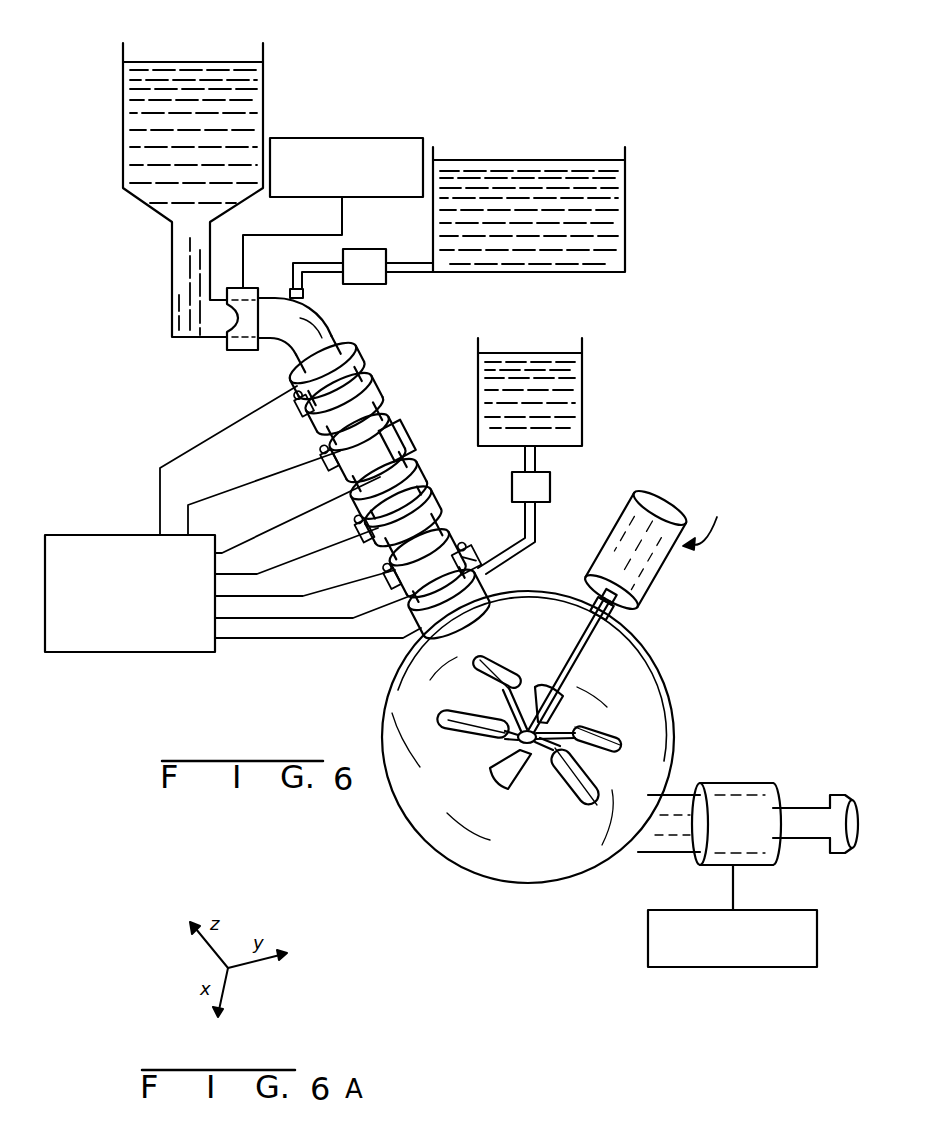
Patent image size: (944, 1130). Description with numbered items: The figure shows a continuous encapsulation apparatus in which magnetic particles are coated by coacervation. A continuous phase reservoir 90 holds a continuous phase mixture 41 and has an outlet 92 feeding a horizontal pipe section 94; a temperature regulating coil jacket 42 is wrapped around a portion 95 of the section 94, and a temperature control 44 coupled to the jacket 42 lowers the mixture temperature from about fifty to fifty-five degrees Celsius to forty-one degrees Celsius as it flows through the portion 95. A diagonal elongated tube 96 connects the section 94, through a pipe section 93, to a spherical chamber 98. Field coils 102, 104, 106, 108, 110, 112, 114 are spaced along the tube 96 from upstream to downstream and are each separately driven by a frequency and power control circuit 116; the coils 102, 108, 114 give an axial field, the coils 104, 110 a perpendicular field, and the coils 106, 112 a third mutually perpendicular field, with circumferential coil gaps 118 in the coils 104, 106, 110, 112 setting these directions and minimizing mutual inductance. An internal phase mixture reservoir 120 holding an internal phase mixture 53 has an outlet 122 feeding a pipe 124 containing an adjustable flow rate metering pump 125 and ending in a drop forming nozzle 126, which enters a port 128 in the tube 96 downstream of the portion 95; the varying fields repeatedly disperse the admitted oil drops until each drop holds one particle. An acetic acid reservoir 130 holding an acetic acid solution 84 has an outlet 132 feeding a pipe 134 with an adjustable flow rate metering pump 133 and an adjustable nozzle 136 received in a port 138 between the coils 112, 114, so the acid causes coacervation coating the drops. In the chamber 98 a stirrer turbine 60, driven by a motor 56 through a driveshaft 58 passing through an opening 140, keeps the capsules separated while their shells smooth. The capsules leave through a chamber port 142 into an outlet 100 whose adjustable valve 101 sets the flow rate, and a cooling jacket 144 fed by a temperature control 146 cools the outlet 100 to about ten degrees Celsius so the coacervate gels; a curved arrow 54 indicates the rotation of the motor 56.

The mixture 41 is at (147, 89).
The temperature regulating coil jacket 42 is at (249, 351).
The temperature control 44 is at (366, 138).
The internal phase mixture 53 is at (608, 188).
The rotation arrow 54 is at (710, 526).
The motor 56 is at (673, 518).
The driveshaft 58 is at (579, 657).
The stirrer turbine 60 is at (565, 802).
The acetic acid solution 84 is at (539, 365).
The continuous phase reservoir 90 is at (264, 88).
The outlet 92 is at (177, 222).
The pipe section 93 is at (172, 281).
The horizontal pipe section 94 is at (180, 338).
The portion 95 is at (229, 322).
The diagonal elongated tube 96 is at (262, 396).
The spherical chamber 98 is at (657, 675).
The outlet 100 is at (672, 796).
The adjustable valve 101 is at (813, 792).
The field coil 102 is at (352, 358).
The field coil 104 is at (372, 399).
The field coil 106 is at (398, 446).
The field coil 108 is at (427, 489).
The field coil 110 is at (443, 518).
The field coil 112 is at (457, 546).
The field coil 114 is at (424, 632).
The frequency and power control circuit 116 is at (105, 653).
The circumferential coil gaps 118 is at (302, 420).
The internal phase mixture reservoir 120 is at (628, 160).
The outlet 122 is at (430, 265).
The pipe 124 is at (407, 273).
The adjustable flow rate metering pump 125 is at (365, 249).
The drop forming nozzle 126 is at (308, 293).
The port 128 is at (288, 295).
The acetic acid reservoir 130 is at (585, 392).
The outlet 132 is at (540, 458).
The adjustable flow rate metering pump 133 is at (552, 488).
The pipe 134 is at (537, 522).
The adjustable nozzle 136 is at (480, 571).
The port 138 is at (470, 568).
The opening 140 is at (630, 614).
The chamber port 142 is at (642, 854).
The cooling jacket 144 is at (746, 783).
The temperature control 146 is at (705, 968).